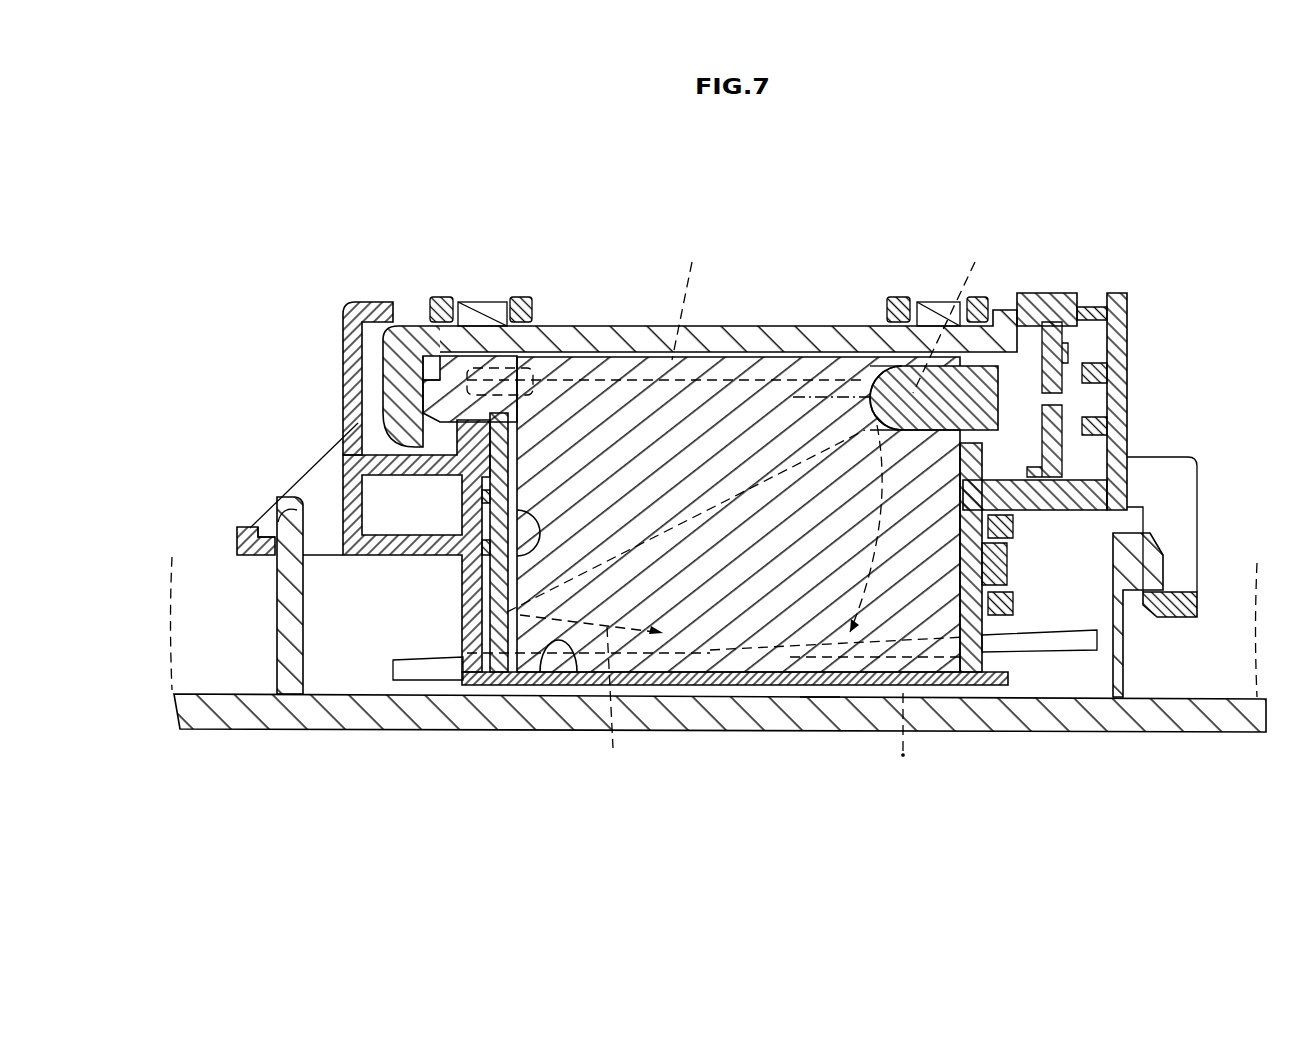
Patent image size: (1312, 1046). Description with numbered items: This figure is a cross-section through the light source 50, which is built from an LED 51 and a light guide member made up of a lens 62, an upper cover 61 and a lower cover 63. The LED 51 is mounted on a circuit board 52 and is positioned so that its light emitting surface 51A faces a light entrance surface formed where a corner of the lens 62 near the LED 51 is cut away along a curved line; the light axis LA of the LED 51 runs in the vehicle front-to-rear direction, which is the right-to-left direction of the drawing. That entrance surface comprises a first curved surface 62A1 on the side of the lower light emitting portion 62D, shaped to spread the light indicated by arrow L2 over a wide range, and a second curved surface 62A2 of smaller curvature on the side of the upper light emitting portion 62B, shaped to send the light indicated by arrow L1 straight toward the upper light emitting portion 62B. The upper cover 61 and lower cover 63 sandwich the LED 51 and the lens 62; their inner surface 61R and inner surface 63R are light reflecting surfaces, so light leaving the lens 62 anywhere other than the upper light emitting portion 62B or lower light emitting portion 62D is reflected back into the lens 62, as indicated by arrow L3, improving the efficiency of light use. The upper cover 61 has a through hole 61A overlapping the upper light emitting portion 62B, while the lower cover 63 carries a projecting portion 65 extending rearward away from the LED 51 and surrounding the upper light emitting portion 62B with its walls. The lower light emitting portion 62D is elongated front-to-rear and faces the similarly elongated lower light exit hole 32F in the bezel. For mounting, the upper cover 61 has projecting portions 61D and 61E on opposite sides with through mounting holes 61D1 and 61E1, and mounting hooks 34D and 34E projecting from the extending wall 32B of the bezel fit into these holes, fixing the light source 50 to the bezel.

The light source 50 is at (1125, 276).
The LED 51 is at (983, 387).
The light emitting surface 51A is at (882, 362).
The circuit board 52 is at (1048, 325).
The upper cover 61 is at (343, 365).
The through hole 61A is at (495, 305).
The projecting portion 61D is at (250, 527).
The mounting hole 61D1 is at (290, 520).
The projecting portion 61E is at (1197, 597).
The mounting hole 61E1 is at (1163, 553).
The inner surface 61R is at (567, 645).
The lens 62 is at (752, 365).
The first curved surface 62A1 is at (915, 412).
The second curved surface 62A2 is at (868, 365).
The upper light emitting portion 62B is at (457, 373).
The lower light emitting portion 62D is at (733, 660).
The lower cover 63 is at (605, 324).
The inner surface 63R is at (540, 510).
The projecting portion 65 is at (430, 395).
The extending wall 32B is at (1187, 717).
The lower light exit hole 32F is at (818, 690).
The mounting hook 34D is at (287, 628).
The mounting hook 34E is at (1117, 567).
The arrow L1 is at (687, 296).
The arrow L2 is at (906, 737).
The arrow L3 is at (611, 708).
The light axis LA is at (944, 314).